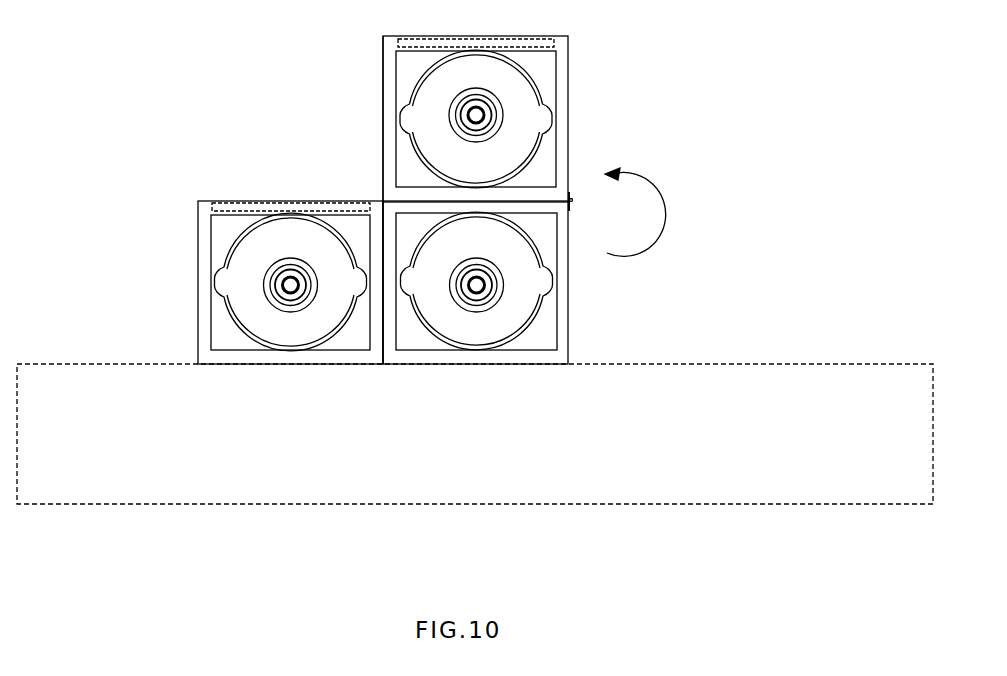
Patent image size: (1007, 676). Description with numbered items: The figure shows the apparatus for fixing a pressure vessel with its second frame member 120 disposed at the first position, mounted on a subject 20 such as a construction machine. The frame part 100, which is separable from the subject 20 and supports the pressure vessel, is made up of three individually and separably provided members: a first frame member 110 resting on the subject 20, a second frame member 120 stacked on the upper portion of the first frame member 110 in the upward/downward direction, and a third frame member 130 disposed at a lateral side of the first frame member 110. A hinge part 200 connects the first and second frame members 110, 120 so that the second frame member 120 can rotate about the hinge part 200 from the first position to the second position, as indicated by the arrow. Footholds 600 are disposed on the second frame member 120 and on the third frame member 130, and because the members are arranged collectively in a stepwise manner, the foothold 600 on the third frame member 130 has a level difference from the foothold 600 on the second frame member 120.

The frame part 100 is at (195, 192).
The first frame member 110 is at (569, 324).
The second frame member 120 is at (569, 84).
The third frame member 130 is at (198, 307).
The hinge part 200 is at (571, 200).
The foothold 600 is at (383, 41).
The subject 20 is at (848, 363).